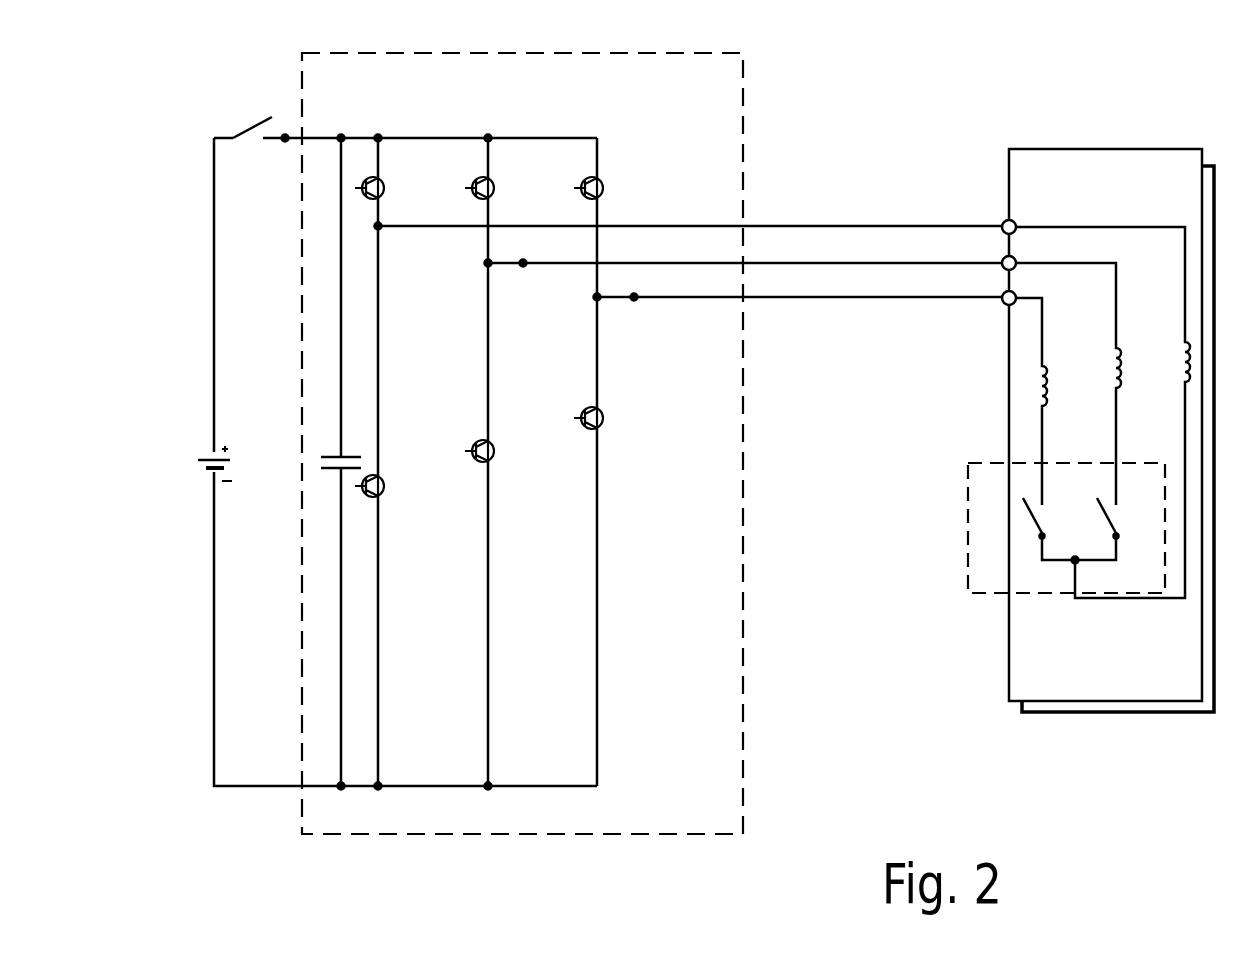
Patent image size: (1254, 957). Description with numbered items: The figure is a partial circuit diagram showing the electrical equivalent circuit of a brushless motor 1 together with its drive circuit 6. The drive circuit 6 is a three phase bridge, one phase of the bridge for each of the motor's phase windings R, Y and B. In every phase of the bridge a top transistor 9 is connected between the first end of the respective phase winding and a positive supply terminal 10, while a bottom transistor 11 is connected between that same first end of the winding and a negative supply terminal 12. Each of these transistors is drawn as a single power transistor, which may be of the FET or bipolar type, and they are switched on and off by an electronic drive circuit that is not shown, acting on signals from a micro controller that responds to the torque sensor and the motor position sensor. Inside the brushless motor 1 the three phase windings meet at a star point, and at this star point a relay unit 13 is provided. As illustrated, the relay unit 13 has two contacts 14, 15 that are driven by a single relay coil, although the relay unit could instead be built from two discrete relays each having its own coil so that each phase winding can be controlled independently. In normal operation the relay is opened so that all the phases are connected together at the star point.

The brushless motor 1 is at (1128, 703).
The drive circuit 6 is at (622, 836).
The top transistor 9 is at (590, 178).
The positive supply terminal 10 is at (285, 136).
The bottom transistor 11 is at (600, 412).
The negative supply terminal 12 is at (282, 787).
The relay unit 13 is at (968, 557).
The relay contact 14 is at (1032, 519).
The relay contact 15 is at (1100, 515).